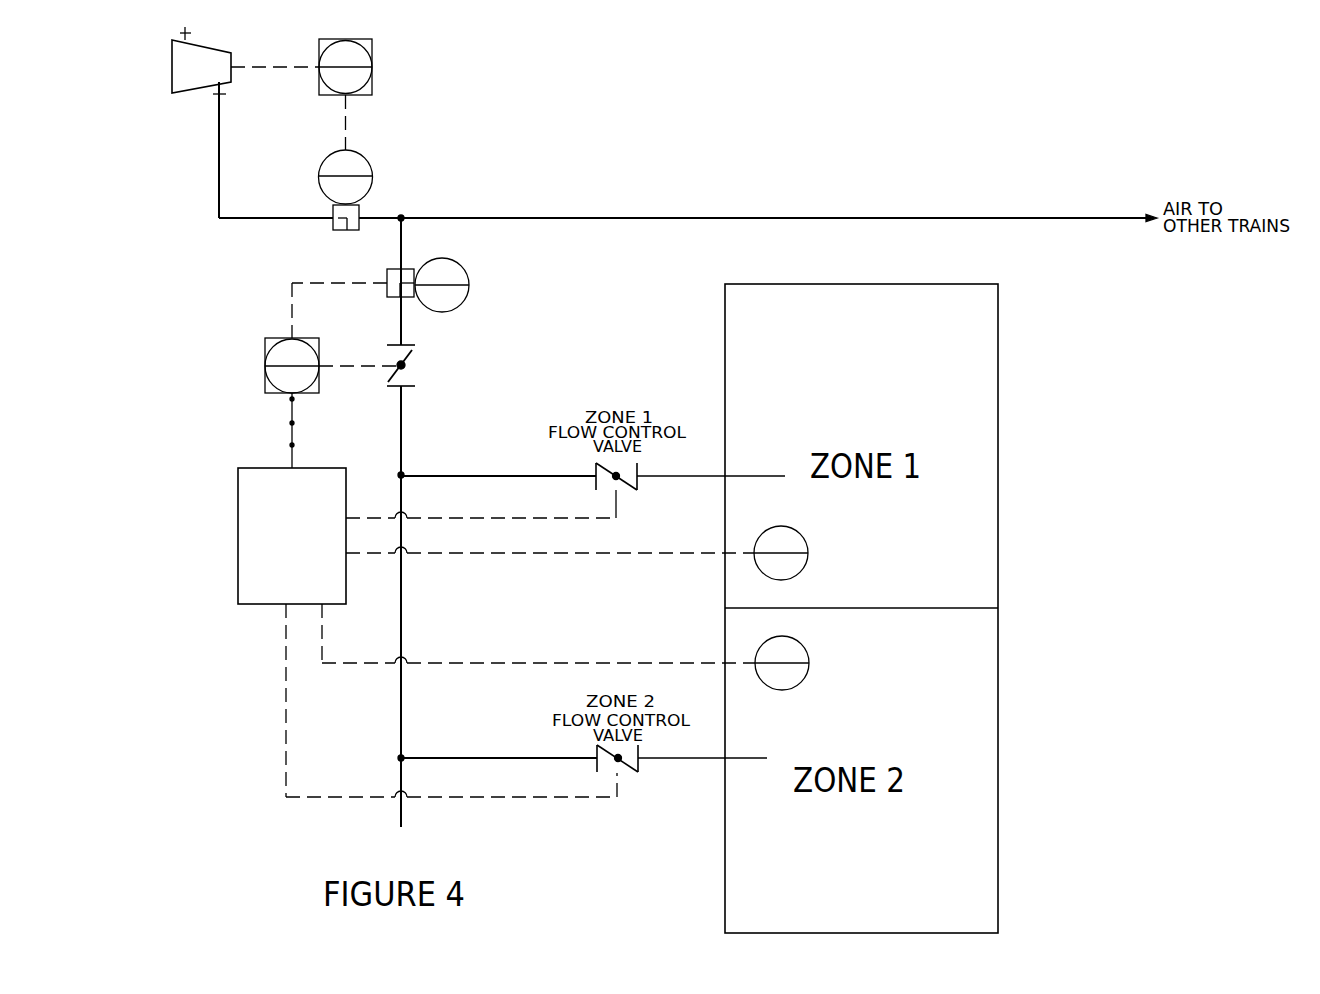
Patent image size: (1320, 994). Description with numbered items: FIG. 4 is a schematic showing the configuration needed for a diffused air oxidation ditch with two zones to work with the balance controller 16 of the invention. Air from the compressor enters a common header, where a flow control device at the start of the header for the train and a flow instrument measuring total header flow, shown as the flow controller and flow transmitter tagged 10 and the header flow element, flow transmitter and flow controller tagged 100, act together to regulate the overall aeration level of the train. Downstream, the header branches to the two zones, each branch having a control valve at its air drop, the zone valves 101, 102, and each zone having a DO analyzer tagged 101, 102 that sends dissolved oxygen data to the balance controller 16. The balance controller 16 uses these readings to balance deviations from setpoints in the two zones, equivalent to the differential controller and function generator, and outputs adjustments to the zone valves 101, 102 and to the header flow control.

The balance controller 16 is at (255, 536).
The flow controller FIC 10 and flow transmitter FIT 10 is at (405, 128).
The flow element FE100, flow transmitter FIT 100 and flow controller FIC 100 is at (424, 299).
The control valve at the air drop for zone one 101 is at (535, 303).
The control valve at the air drop for zone two 102 is at (838, 668).